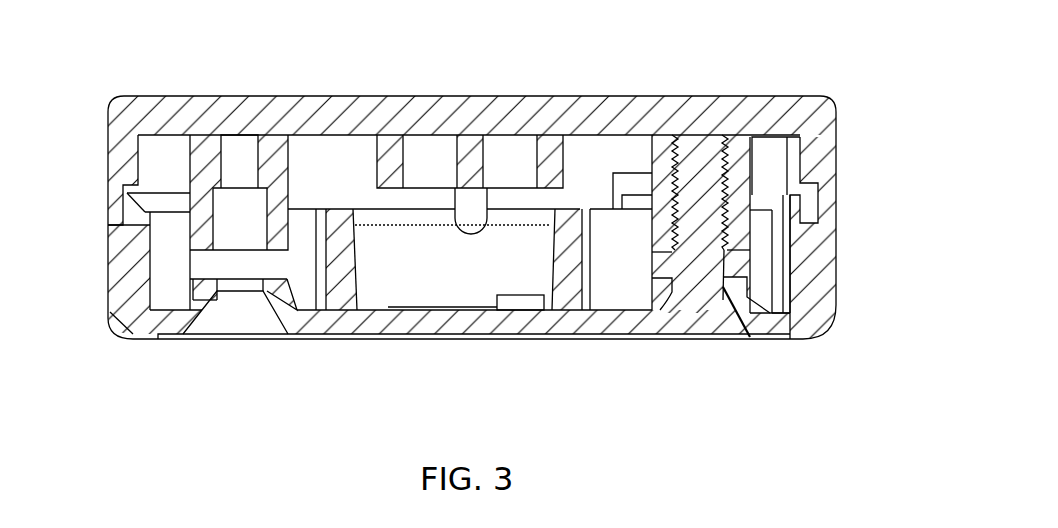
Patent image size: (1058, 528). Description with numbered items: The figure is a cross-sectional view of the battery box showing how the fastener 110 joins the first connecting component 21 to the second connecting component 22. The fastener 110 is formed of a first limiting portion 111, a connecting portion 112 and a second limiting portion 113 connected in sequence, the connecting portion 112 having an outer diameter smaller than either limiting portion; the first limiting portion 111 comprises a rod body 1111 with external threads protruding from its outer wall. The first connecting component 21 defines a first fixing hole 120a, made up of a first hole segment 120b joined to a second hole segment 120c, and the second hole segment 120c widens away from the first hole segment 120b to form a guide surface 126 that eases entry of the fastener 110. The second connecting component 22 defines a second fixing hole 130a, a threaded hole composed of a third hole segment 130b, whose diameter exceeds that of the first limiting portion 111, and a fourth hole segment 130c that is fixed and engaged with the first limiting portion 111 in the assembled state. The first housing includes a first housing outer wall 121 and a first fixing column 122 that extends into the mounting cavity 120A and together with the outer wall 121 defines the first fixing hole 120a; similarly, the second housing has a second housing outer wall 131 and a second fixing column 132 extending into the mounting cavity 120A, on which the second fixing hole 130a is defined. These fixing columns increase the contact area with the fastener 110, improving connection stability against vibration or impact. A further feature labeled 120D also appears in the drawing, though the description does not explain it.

The first connecting component 21 is at (792, 340).
The second connecting component 22 is at (710, 118).
The fastener 110 is at (834, 225).
The first limiting portion 111 is at (750, 195).
The connecting portion 112 is at (715, 276).
The second limiting portion 113 is at (733, 303).
The rod body 1111 is at (667, 163).
The mounting cavity 120A is at (422, 193).
The positioning recess 120D is at (160, 258).
The first fixing hole 120a is at (117, 361).
The first hole segment 120b is at (228, 282).
The second hole segment 120c is at (228, 316).
The first housing outer wall 121 is at (460, 335).
The first fixing column 122 is at (272, 281).
The guide surface 126 is at (278, 320).
The second fixing hole 130a is at (108, 53).
The third hole segment 130b is at (232, 152).
The fourth hole segment 130c is at (218, 210).
The second housing outer wall 131 is at (584, 106).
The second fixing column 132 is at (273, 172).